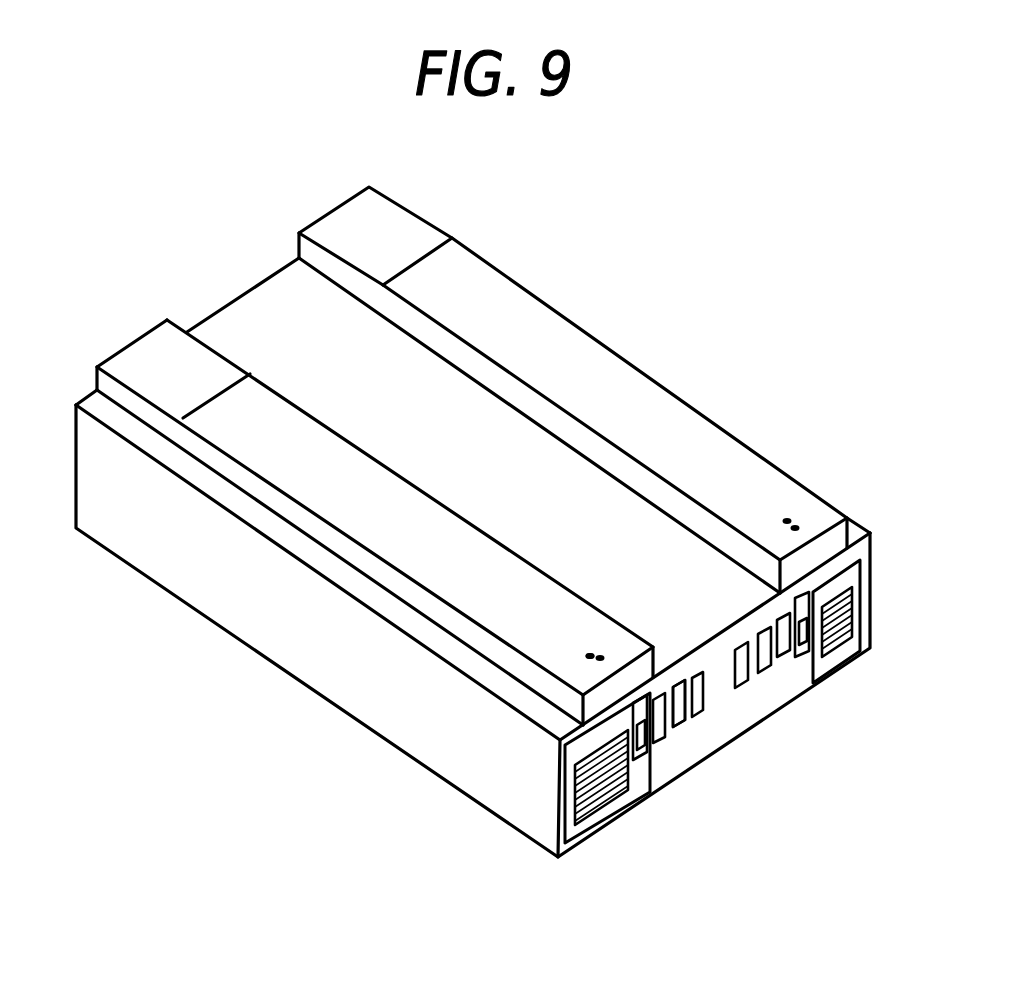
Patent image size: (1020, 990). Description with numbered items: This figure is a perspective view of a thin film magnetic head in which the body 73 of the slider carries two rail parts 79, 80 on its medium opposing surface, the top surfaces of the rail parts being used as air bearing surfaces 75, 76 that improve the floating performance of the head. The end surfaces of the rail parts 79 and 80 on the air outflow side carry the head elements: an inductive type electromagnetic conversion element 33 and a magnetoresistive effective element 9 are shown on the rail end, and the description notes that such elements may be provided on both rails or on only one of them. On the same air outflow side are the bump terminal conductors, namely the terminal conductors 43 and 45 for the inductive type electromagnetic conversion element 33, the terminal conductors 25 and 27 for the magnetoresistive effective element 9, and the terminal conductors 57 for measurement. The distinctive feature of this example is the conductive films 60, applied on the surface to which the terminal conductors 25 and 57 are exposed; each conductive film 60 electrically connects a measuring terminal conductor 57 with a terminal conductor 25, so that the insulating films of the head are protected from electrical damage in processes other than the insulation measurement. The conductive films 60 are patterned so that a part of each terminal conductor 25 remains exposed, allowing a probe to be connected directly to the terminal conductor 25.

The magnetoresistive effective element 9 is at (590, 654).
The terminal conductor 25 is at (802, 637).
The terminal conductor 27 is at (670, 686).
The inductive type electromagnetic conversion element 33 is at (597, 656).
The terminal conductor 43 is at (682, 720).
The terminal conductor 45 is at (705, 707).
The terminal conductor for measurement 57 is at (845, 635).
The conductive film 60 is at (863, 577).
The housing body 73 is at (222, 610).
The air bearing surface 75 is at (270, 405).
The air bearing surface 76 is at (558, 332).
The rail part 79 is at (110, 388).
The rail part 80 is at (317, 257).